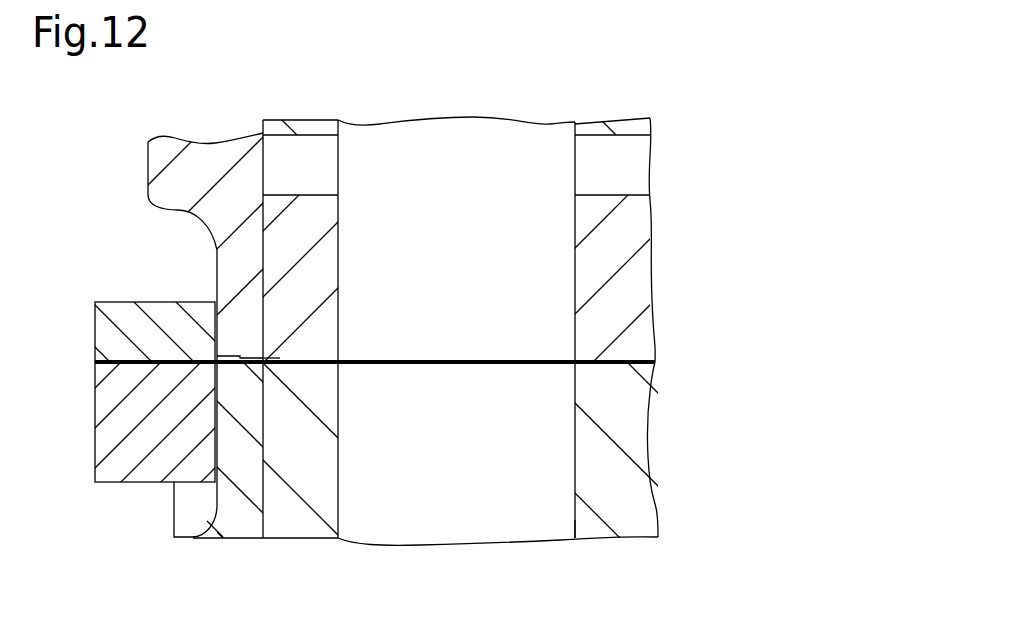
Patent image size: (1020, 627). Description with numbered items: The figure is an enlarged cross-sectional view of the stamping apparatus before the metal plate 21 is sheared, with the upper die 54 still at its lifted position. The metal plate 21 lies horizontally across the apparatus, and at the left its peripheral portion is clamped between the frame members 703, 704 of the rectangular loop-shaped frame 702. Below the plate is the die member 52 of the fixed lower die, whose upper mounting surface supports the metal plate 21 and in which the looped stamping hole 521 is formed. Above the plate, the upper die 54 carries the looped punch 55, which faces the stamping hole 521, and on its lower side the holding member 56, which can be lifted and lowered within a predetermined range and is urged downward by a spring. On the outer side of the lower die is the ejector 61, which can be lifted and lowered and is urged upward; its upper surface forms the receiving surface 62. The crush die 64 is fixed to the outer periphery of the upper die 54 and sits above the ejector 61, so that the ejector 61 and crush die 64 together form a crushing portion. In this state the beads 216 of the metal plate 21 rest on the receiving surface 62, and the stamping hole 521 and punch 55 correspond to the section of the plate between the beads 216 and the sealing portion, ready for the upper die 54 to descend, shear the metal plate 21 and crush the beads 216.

The metal plate 21 is at (130, 365).
The die member 52 is at (658, 496).
The upper die 54 is at (650, 122).
The punch 55 is at (396, 130).
The holding member 56 is at (650, 215).
The ejector 61 is at (227, 508).
The receiving surface 62 is at (263, 354).
The crush die 64 is at (148, 158).
The beads 216 is at (242, 354).
The stamping hole 521 is at (575, 520).
The frame 702 is at (114, 302).
The frame member 703 is at (95, 331).
The frame member 704 is at (95, 445).